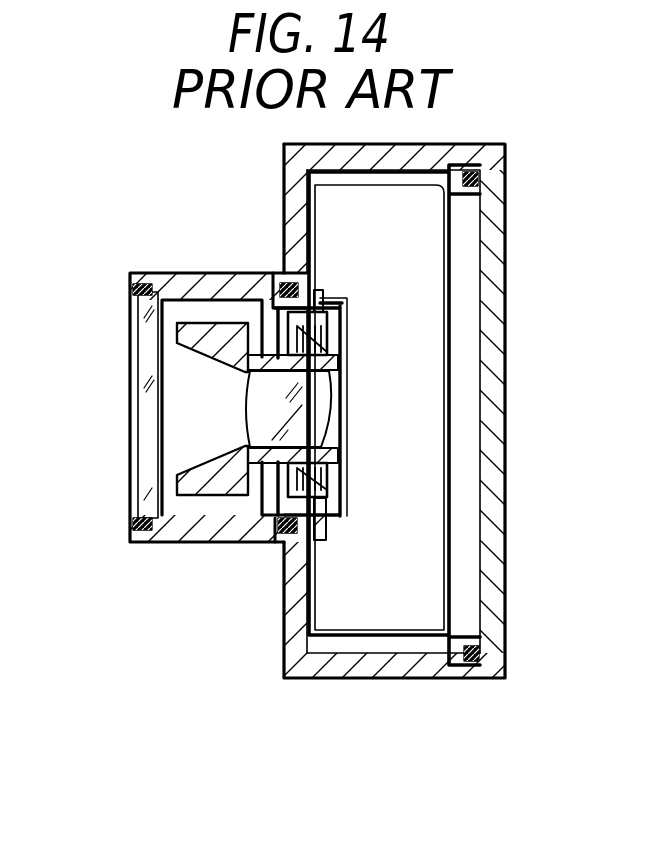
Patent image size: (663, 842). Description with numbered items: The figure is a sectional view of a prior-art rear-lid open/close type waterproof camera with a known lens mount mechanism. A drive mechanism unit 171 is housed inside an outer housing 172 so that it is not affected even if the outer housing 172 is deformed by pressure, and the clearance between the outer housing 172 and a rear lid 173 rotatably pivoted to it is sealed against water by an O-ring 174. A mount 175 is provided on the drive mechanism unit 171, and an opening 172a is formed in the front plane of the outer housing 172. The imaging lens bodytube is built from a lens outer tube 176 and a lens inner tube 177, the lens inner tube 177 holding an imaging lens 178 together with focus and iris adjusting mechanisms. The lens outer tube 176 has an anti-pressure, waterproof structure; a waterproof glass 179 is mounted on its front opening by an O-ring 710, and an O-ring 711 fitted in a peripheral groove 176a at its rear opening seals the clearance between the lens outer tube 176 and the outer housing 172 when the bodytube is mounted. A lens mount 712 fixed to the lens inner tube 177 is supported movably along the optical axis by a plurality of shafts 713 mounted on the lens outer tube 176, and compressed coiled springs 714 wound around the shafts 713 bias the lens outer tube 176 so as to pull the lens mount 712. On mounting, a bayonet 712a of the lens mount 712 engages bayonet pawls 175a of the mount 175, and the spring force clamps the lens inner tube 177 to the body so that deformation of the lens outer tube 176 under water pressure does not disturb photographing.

The drive mechanism unit 171 is at (427, 613).
The outer housing 172 is at (368, 663).
The opening 172a is at (300, 535).
The rear lid 173 is at (497, 553).
The O-ring 174 is at (483, 645).
The mount 175 is at (323, 533).
The bayonet pawls 175a is at (322, 307).
The lens outer tube 176 is at (165, 533).
The peripheral groove 176a is at (270, 535).
The lens inner tube 177 is at (197, 478).
The imaging lens 178 is at (257, 425).
The waterproof glass 179 is at (147, 338).
The O-ring 710 is at (132, 287).
The O-ring 711 is at (287, 278).
The lens mount 712 is at (282, 318).
The bayonet 712a is at (337, 332).
The shafts 713 is at (285, 348).
The compressed coiled springs 714 is at (332, 345).